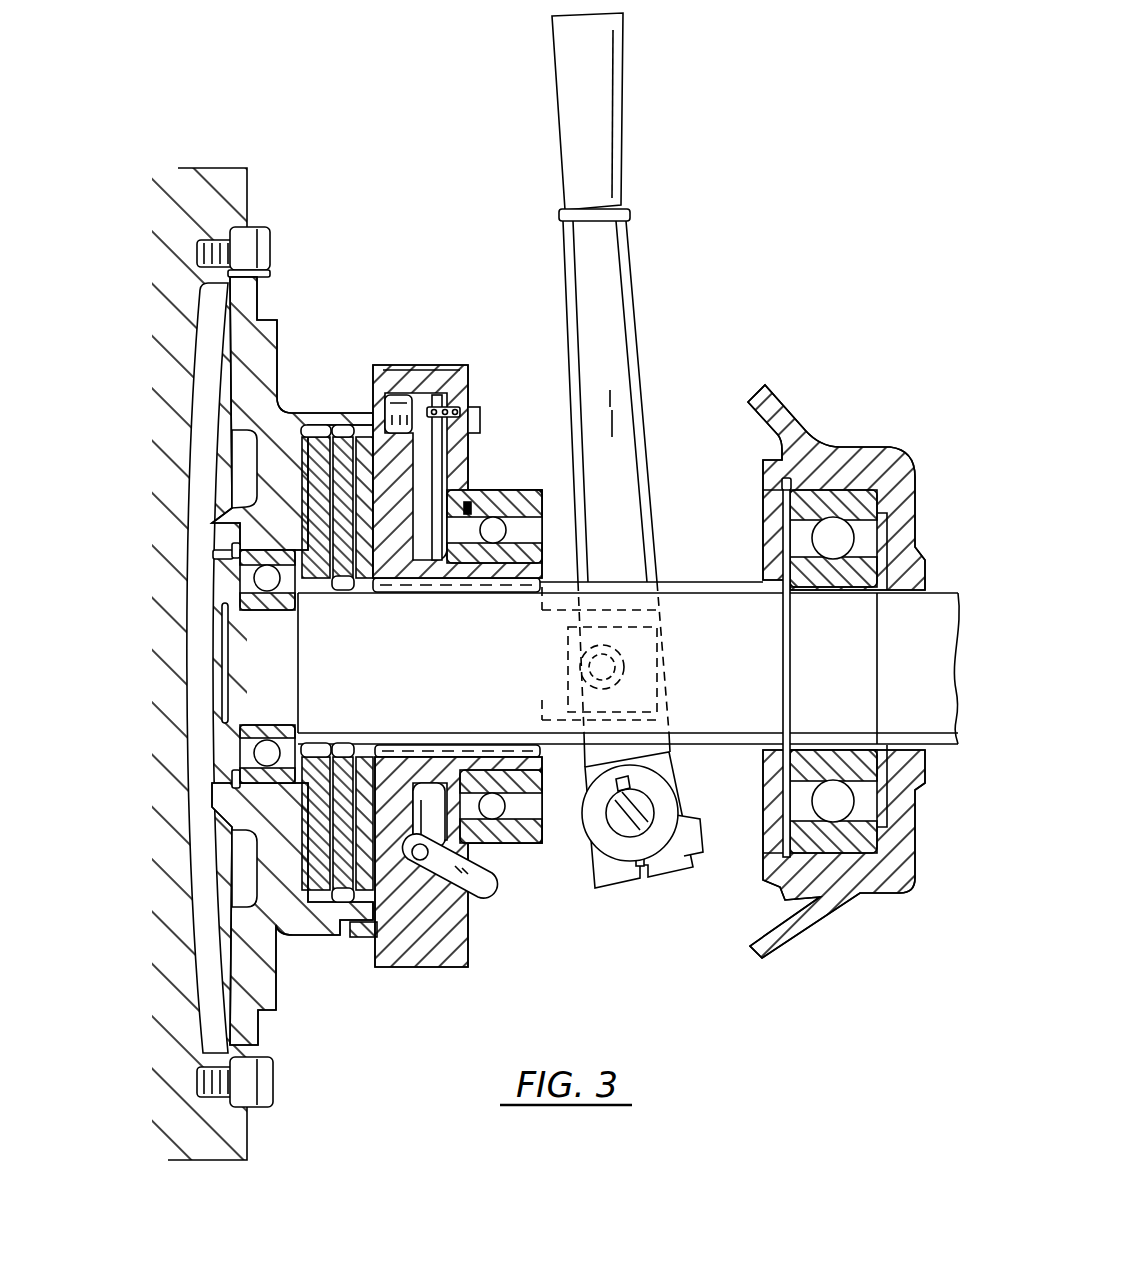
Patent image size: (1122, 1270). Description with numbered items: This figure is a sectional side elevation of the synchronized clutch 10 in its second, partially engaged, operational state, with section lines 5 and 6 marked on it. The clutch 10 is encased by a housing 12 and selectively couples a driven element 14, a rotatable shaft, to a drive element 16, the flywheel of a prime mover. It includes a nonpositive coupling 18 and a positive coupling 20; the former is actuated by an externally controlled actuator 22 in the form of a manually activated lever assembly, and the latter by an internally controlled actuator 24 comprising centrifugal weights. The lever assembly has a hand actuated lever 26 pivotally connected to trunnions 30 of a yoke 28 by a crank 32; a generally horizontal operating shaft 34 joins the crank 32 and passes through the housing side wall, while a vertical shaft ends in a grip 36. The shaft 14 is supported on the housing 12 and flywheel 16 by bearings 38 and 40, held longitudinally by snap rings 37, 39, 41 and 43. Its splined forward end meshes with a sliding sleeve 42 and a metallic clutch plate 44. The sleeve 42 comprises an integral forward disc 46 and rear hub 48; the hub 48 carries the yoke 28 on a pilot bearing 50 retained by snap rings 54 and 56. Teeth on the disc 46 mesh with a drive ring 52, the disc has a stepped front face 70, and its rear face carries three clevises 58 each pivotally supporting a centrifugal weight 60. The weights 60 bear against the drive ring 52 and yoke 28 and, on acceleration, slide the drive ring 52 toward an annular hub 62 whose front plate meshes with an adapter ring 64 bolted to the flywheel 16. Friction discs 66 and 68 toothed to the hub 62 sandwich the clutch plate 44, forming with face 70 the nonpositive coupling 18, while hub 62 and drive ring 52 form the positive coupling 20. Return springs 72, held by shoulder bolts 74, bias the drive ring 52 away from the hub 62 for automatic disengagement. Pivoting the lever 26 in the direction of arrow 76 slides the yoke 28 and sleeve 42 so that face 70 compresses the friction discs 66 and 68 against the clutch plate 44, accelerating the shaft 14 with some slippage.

The section line 5- 5 is at (715, 313).
The section line 6- 6 is at (505, 313).
The clutch 10 is at (385, 150).
The housing 12 is at (830, 450).
The driven element 14 is at (935, 593).
The drive element 16 is at (230, 168).
The nonpositive coupling 18 is at (343, 420).
The positive coupling 20 is at (387, 352).
The externally controlled actuator 22 is at (655, 420).
The internally controlled actuator 24 is at (500, 893).
The hand actuated lever 26 is at (630, 215).
The yoke 28 is at (532, 848).
The trunnions 30 is at (625, 648).
The crank 32 is at (678, 880).
The operating shaft 34 is at (645, 810).
The grip 36 is at (624, 140).
The snap ring 37 is at (783, 558).
The bearing 38 is at (880, 490).
The snap ring 39 is at (783, 535).
The bearing 40 is at (257, 575).
The snap ring 41 is at (233, 737).
The sliding sleeve 42 is at (425, 457).
The snap ring 43 is at (233, 557).
The clutch plate 44 is at (343, 883).
The forward disc 46 is at (397, 930).
The rear hub 48 is at (530, 575).
The pilot bearing 50 is at (530, 560).
The drive ring 52 is at (423, 362).
The snap ring 54 is at (530, 553).
The snap ring 56 is at (465, 503).
The clevises 58 is at (423, 883).
The centrifugal weight 60 is at (490, 885).
The annular hub 62 is at (290, 410).
The adapter ring 64 is at (262, 292).
The friction disc 66 is at (300, 877).
The friction disc 68 is at (340, 822).
The front face 70 is at (367, 563).
The return springs 72 is at (460, 382).
The shoulder bolts 74 is at (482, 402).
The arrow 76 is at (645, 290).